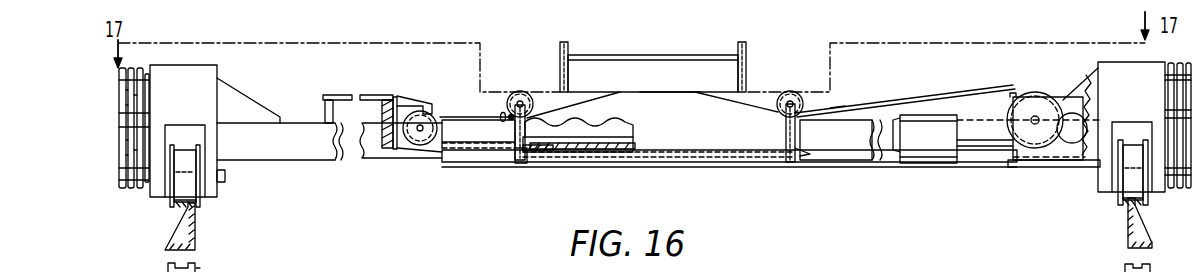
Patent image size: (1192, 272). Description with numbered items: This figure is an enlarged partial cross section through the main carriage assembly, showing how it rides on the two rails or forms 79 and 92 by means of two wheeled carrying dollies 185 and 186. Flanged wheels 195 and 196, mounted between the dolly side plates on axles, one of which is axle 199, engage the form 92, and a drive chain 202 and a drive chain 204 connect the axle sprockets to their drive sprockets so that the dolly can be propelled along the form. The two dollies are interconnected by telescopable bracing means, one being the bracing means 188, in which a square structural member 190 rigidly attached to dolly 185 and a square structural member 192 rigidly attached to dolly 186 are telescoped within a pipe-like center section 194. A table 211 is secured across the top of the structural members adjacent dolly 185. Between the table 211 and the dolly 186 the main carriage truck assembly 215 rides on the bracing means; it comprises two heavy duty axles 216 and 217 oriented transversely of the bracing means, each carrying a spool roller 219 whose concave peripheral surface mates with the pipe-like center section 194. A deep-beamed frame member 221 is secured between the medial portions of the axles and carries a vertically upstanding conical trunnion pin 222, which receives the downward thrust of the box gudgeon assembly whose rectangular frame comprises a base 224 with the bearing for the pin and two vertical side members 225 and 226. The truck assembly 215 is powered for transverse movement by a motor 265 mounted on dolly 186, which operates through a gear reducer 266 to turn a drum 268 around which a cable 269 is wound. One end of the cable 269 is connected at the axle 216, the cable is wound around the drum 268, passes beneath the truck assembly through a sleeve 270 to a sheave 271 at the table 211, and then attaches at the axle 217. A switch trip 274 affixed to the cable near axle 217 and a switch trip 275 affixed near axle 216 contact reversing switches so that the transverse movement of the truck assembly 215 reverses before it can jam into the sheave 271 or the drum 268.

The drive chain 204 is at (124, 102).
The drive chain 202 is at (135, 145).
The wheeled carrying dolly 185 is at (215, 131).
The flanged wheel 195 is at (183, 173).
The form 92 is at (187, 212).
The axle 199 is at (157, 265).
The flanged wheel 196 is at (205, 270).
The structural member 190 is at (293, 157).
The table 211 is at (347, 95).
The sheave 271 is at (418, 147).
The cable 269 is at (495, 150).
The switch trip 274 is at (503, 113).
The spool roller 219 is at (540, 72).
The heavy duty axle 217 is at (518, 162).
The sleeve 270 is at (600, 148).
The deep-beamed frame member 221 is at (652, 110).
The conical trunnion pin 222 is at (665, 93).
The base 224 is at (653, 73).
The vertical side member 225 is at (586, 67).
The vertical side member 226 is at (748, 63).
The heavy duty axle 216 is at (787, 147).
The main carriage truck assembly 215 is at (800, 156).
The pipe-like center section 194 is at (875, 125).
The bracing means 188 is at (933, 163).
The structural member 192 is at (989, 152).
The switch trip 275 is at (862, 108).
The drum 268 is at (1035, 92).
The motor 265 is at (1075, 128).
The wheeled carrying dolly 186 is at (1114, 127).
The gear reducer 266 is at (1058, 150).
The form 79 is at (1130, 226).